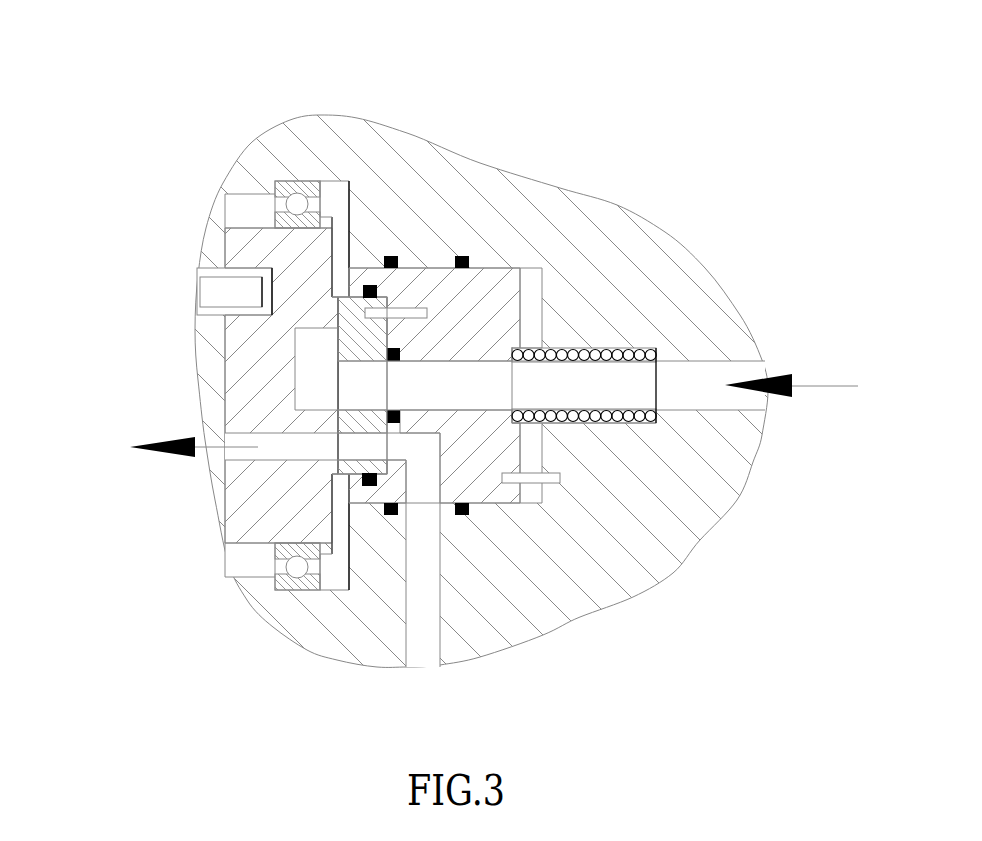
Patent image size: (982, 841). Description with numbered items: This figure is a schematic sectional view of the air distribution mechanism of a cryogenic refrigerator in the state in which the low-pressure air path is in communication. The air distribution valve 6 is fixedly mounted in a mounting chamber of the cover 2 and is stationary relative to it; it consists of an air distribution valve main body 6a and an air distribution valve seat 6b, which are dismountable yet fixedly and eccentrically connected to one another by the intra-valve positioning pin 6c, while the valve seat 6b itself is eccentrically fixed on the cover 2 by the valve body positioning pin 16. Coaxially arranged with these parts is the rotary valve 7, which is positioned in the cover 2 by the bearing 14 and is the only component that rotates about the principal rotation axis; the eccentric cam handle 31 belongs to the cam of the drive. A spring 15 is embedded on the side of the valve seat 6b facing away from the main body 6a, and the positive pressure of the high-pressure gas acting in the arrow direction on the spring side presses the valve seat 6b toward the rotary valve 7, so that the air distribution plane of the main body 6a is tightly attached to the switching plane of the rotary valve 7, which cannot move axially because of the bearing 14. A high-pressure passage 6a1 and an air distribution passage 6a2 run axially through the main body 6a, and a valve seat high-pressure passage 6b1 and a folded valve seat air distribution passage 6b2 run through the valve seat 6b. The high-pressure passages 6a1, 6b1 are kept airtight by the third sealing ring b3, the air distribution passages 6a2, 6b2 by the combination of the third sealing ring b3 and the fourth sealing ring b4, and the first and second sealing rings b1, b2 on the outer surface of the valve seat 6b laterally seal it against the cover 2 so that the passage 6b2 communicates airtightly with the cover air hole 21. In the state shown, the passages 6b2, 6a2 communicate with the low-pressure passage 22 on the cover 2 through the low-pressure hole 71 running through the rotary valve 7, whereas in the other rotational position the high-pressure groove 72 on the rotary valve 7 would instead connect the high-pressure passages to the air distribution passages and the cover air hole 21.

The cover 2 is at (270, 157).
The bearing 14 is at (283, 200).
The eccentric cam handle 31 is at (222, 292).
The third sealing ring b3 is at (362, 291).
The high-pressure groove 72 is at (330, 368).
The high-pressure passage 6a1 is at (353, 392).
The low-pressure hole 71 is at (260, 440).
The low-pressure passage 22 is at (162, 452).
The rotary valve 7 is at (240, 472).
The air distribution passage 6a2 is at (352, 452).
The fourth sealing ring b4 is at (368, 487).
The cover air hole 21 is at (428, 607).
The first sealing ring b1 is at (391, 258).
The second sealing ring b2 is at (464, 258).
The intra-valve positioning pin 6c is at (427, 310).
The air distribution valve main body 6a is at (375, 334).
The air distribution valve seat 6b is at (512, 340).
The air distribution valve 6 is at (812, 115).
The spring 15 is at (622, 336).
The valve seat high-pressure passage 6b1 is at (445, 383).
The valve body positioning pin 16 is at (558, 482).
The valve seat air distribution passage 6b2 is at (440, 475).